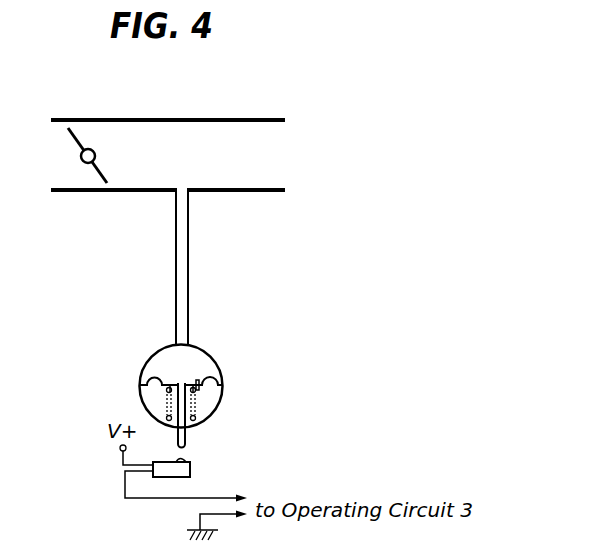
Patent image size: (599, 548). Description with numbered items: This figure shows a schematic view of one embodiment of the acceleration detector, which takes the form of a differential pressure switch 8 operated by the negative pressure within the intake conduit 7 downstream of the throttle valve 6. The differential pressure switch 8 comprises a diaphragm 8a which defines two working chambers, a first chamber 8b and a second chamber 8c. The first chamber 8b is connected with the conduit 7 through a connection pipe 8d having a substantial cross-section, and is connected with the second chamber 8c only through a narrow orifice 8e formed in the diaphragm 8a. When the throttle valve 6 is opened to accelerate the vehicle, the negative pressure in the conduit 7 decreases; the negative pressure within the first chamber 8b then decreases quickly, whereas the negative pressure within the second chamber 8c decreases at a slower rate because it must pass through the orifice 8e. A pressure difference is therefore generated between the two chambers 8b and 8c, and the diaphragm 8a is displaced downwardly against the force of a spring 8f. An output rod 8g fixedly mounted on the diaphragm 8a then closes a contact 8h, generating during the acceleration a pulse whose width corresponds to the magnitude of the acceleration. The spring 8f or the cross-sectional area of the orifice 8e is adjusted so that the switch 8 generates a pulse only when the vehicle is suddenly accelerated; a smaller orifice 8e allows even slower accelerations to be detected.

The intake conduit 7 is at (252, 120).
The throttle valve 6 is at (98, 172).
The differential pressure switch 8 is at (237, 376).
The diaphragm 8a is at (168, 386).
The first working chamber 8b is at (192, 360).
The second working chamber 8c is at (214, 397).
The connection pipe 8d is at (190, 227).
The orifice 8e is at (200, 382).
The spring 8f is at (165, 398).
The output rod 8g is at (186, 433).
The contact 8h is at (190, 468).